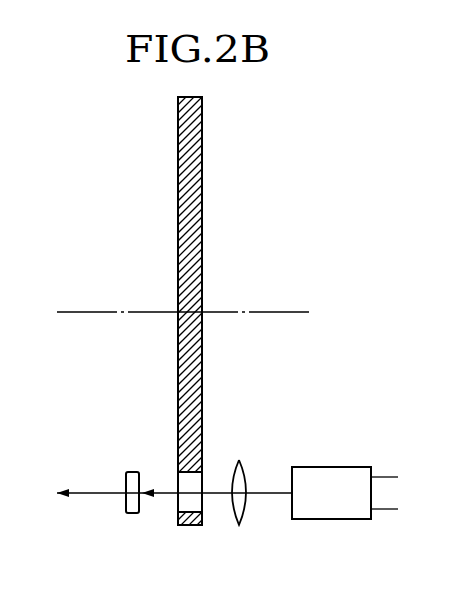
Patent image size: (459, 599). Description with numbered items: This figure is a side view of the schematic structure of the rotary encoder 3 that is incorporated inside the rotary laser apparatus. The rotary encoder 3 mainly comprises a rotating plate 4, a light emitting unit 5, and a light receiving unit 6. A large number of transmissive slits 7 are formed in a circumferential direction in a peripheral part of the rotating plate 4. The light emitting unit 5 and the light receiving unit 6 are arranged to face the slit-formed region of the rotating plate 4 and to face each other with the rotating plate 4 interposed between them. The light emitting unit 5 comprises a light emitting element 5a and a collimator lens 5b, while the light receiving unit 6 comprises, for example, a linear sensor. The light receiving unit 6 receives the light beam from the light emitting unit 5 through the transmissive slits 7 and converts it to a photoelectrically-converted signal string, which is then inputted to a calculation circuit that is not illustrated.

The rotary encoder 3 is at (230, 284).
The rotating plate 4 is at (200, 128).
The light emitting unit 5 is at (345, 483).
The light emitting element 5a is at (330, 508).
The collimator lens 5b is at (236, 522).
The light receiving unit 6 is at (128, 452).
The transmissive slits 7 is at (187, 498).